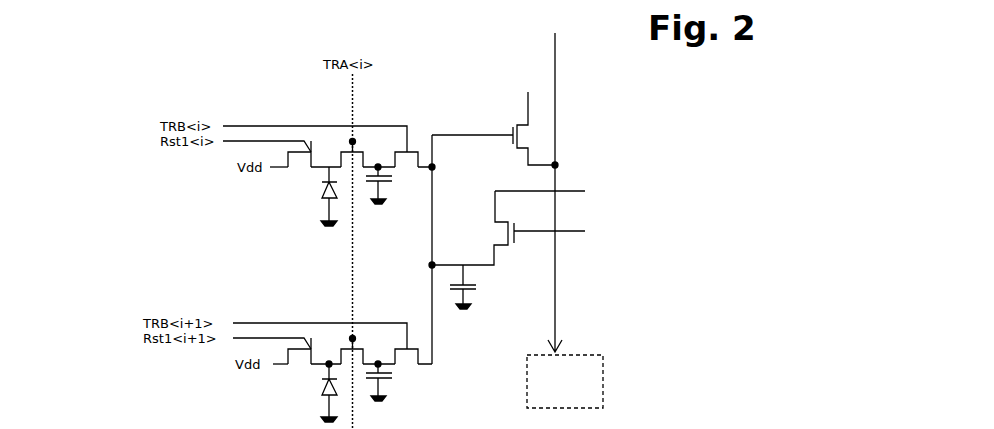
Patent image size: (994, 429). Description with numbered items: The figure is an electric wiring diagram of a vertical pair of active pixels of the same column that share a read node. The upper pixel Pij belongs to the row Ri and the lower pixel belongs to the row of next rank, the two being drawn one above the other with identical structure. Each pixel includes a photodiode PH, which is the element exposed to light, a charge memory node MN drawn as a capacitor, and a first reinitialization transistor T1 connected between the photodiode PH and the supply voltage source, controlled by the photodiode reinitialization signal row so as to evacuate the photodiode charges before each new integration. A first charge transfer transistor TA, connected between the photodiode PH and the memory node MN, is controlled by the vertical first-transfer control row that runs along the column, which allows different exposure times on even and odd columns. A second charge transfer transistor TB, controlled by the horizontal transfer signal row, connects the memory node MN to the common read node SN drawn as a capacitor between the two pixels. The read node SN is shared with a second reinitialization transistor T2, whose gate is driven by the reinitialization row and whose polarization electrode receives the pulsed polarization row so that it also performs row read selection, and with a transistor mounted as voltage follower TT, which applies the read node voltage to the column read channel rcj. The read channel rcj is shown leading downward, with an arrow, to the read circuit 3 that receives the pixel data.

The read circuit 3 is at (603, 367).
The first reinitialization transistor T1 is at (311, 141).
The first charge transfer transistor TA is at (366, 147).
The second charge transfer transistor TB is at (414, 148).
The transistor mounted as voltage follower TT is at (512, 134).
The second reinitialization transistor T2 is at (516, 229).
The photodiode PH is at (314, 294).
The charge memory node MN is at (382, 189).
The read node SN is at (469, 287).
The read channel of the column rcj is at (556, 54).
The row of rank i Ri is at (63, 176).
The pixel of row i and column j Pij is at (172, 95).